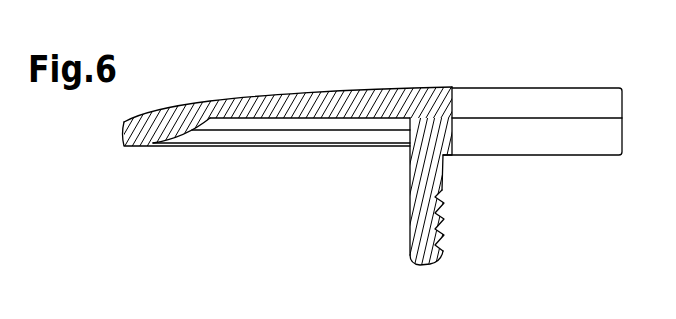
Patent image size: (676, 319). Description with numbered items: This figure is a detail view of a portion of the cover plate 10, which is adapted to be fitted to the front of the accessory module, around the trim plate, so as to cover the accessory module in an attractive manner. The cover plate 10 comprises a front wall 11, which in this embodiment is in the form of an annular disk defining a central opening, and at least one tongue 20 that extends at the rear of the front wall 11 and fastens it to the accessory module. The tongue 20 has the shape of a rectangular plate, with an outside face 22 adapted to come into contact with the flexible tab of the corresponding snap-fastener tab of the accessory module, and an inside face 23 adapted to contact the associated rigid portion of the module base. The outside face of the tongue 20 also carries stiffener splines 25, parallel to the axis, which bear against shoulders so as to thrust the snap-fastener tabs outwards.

The cover plate 10 is at (343, 87).
The front wall 11 is at (270, 90).
The tongue 20 is at (409, 205).
The outside face 22 is at (409, 230).
The inside face 23 is at (440, 218).
The stiffener spline 25 is at (409, 173).